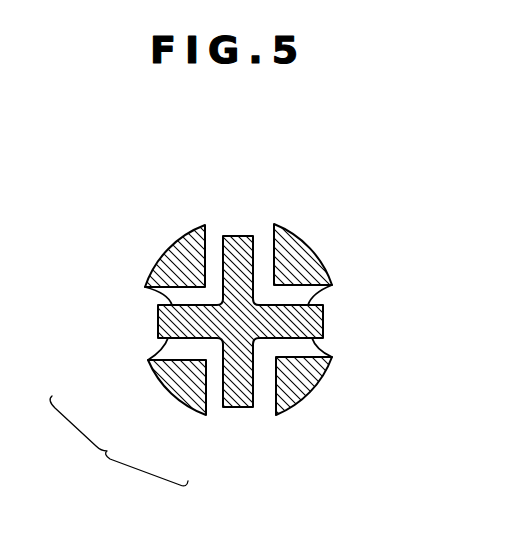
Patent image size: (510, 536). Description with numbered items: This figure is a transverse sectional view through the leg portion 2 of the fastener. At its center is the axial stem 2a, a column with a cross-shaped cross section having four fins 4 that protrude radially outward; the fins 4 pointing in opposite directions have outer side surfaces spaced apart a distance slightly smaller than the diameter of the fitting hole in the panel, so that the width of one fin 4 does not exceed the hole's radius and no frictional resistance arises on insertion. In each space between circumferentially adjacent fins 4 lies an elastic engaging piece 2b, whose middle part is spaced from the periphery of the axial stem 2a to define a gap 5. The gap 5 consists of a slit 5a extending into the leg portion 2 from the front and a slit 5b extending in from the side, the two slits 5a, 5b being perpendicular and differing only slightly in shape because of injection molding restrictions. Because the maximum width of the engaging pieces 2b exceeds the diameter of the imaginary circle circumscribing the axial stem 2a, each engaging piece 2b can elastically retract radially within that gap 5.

The leg portion 2 is at (255, 342).
The axial stem 2a is at (250, 291).
The elastic engaging pieces 2b is at (166, 250).
The fins 4 is at (237, 237).
The gap 5 is at (119, 444).
The slit 5a is at (262, 246).
The slit 5b is at (152, 300).